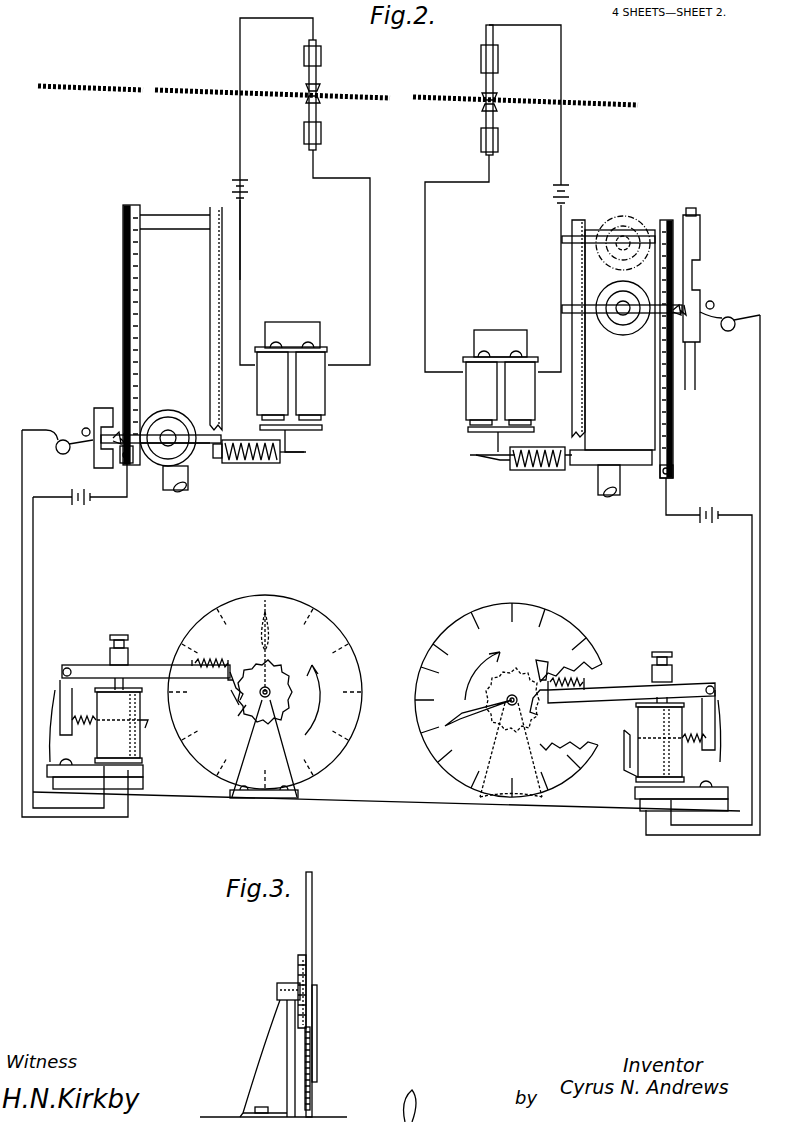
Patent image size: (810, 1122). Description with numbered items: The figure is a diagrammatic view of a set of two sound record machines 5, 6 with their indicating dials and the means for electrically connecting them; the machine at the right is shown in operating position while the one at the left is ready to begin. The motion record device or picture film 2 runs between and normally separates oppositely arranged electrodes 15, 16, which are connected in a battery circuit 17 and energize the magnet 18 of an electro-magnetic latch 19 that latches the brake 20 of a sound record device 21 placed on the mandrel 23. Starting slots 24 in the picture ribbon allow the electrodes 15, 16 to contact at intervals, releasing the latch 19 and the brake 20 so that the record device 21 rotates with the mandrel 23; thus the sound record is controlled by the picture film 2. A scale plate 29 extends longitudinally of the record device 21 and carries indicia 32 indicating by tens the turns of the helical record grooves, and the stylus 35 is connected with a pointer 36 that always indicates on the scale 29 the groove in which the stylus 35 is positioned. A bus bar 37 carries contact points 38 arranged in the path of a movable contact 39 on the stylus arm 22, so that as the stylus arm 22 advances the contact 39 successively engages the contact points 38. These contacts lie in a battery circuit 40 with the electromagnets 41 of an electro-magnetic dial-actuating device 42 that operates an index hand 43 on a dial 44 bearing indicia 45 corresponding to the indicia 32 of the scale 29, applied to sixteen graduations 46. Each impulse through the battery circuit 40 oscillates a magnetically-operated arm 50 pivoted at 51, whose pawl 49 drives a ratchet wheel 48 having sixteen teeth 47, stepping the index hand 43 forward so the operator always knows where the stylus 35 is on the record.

In FIG. 2, the motion record device or picture film 2 is at (370, 92).
In FIG. 2, the starting slot 24 is at (68, 90).
In FIG. 2, the sound record machine 5 is at (144, 177).
In FIG. 2, the sound record machine 6 is at (658, 187).
In FIG. 2, the electrode 15 is at (317, 88).
In FIG. 2, the electrode 16 is at (307, 100).
In FIG. 2, the battery circuit 17 is at (238, 143).
In FIG. 2, the magnet 18 is at (330, 385).
In FIG. 2, the electro-magnetic latch 19 is at (310, 442).
In FIG. 2, the brake 20 is at (222, 463).
In FIG. 2, the sound record device 21 is at (397, 340).
In FIG. 2, the stylus arm 22 is at (155, 463).
In FIG. 2, the mandrel 23 is at (178, 480).
In FIG. 2, the scale plate 29 is at (210, 313).
In FIG. 2, the indicia 32 is at (566, 244).
In FIG. 2, the stylus 35 is at (170, 436).
In FIG. 2, the pointer 36 is at (566, 309).
In FIG. 2, the bus bar 37 is at (128, 250).
In FIG. 2, the contact point 38 is at (128, 272).
In FIG. 2, the movable contact 39 is at (145, 418).
In FIG. 2, the battery circuit 40 is at (755, 563).
In FIG. 2, the electromagnet 41 is at (136, 718).
In FIG. 2, the electro-magnetic dial-actuating device 42 is at (161, 632).
In FIG. 2, the index hand 43 is at (270, 650).
In FIG. 3, the index hand 43 is at (318, 1048).
In FIG. 2, the dial 44 is at (249, 596).
In FIG. 3, the dial 44 is at (313, 932).
In FIG. 2, the indicia 45 is at (442, 647).
In FIG. 2, the graduations 46 is at (317, 614).
In FIG. 2, the teeth 47 is at (240, 706).
In FIG. 3, the teeth 47 is at (298, 960).
In FIG. 2, the ratchet wheel 48 is at (252, 670).
In FIG. 3, the ratchet wheel 48 is at (298, 977).
In FIG. 2, the pawl 49 is at (232, 694).
In FIG. 2, the magnetically-operated arm 50 is at (148, 670).
In FIG. 2, the pivot 51 is at (66, 667).